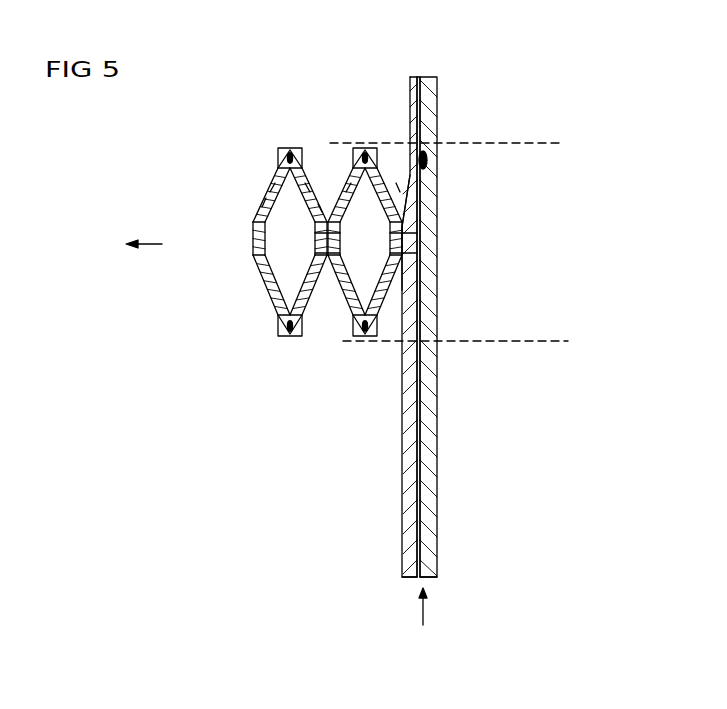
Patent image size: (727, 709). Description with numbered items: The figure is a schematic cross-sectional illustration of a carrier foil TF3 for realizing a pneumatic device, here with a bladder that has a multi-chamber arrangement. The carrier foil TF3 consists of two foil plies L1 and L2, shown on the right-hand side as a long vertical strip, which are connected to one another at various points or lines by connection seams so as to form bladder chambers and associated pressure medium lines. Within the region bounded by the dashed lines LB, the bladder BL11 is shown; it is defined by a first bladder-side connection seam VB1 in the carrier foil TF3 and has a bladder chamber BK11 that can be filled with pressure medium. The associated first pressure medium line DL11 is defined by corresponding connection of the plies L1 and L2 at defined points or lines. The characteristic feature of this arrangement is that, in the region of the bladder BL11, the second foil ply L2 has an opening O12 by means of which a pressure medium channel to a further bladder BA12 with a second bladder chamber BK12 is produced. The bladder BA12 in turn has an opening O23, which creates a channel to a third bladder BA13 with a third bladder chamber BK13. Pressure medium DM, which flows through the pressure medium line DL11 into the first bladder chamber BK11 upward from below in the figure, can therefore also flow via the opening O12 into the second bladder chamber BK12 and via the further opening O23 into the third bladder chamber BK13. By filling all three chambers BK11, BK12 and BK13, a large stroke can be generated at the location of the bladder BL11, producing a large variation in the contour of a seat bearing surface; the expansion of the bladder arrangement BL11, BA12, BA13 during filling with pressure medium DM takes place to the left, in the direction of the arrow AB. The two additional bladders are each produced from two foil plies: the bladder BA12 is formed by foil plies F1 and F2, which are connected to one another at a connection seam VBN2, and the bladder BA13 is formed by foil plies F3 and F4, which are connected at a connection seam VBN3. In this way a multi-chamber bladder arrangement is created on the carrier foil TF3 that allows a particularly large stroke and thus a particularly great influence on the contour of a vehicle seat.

The third bladder chamber BK13 is at (283, 273).
The second bladder chamber BK12 is at (358, 273).
The first bladder chamber BK11 is at (437, 262).
The third bladder BA13 is at (266, 199).
The further bladder BA12 is at (320, 203).
The opening O23 is at (318, 242).
The opening O12 is at (410, 243).
The arrow AB is at (144, 230).
The connection seam VBN3 is at (290, 336).
The connection seam VBN2 is at (366, 336).
The first bladder-side connection seam VB1 is at (427, 160).
The foil ply F4 is at (275, 183).
The foil ply F3 is at (305, 183).
The foil ply F2 is at (351, 183).
The foil ply F1 is at (396, 183).
The dashed lines LB is at (564, 378).
The bladder BL11 is at (437, 297).
The foil ply L1 is at (430, 383).
The second foil ply L2 is at (407, 490).
The first pressure medium line DL11 is at (420, 492).
The carrier foil TF3 is at (446, 562).
The pressure medium DM is at (442, 606).